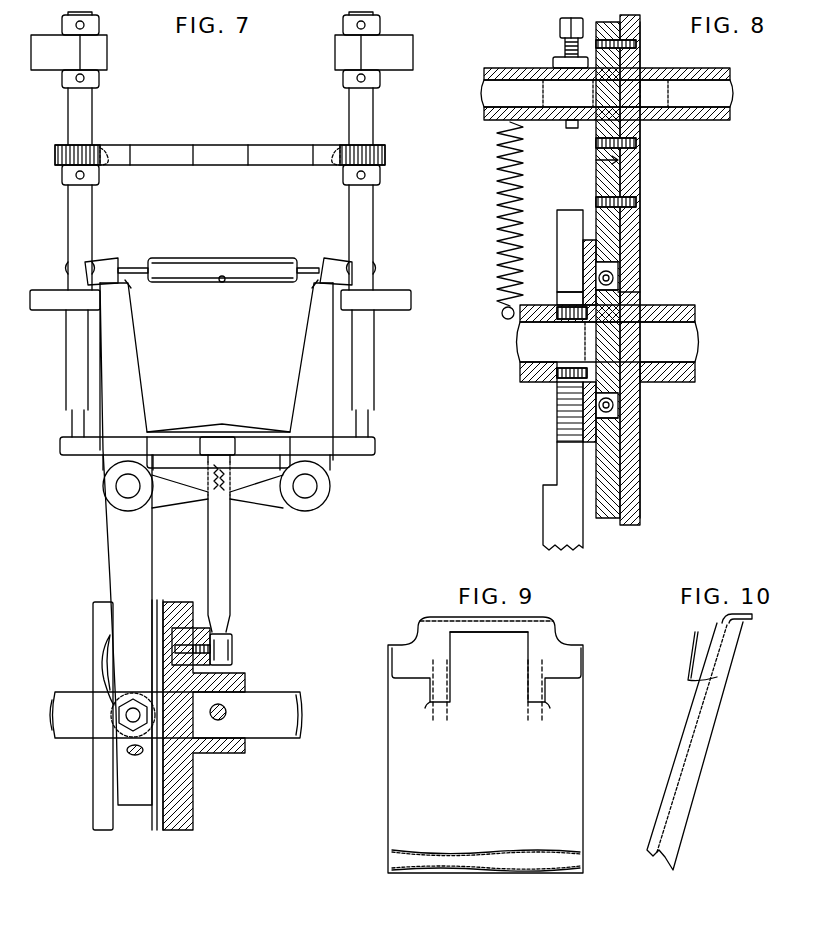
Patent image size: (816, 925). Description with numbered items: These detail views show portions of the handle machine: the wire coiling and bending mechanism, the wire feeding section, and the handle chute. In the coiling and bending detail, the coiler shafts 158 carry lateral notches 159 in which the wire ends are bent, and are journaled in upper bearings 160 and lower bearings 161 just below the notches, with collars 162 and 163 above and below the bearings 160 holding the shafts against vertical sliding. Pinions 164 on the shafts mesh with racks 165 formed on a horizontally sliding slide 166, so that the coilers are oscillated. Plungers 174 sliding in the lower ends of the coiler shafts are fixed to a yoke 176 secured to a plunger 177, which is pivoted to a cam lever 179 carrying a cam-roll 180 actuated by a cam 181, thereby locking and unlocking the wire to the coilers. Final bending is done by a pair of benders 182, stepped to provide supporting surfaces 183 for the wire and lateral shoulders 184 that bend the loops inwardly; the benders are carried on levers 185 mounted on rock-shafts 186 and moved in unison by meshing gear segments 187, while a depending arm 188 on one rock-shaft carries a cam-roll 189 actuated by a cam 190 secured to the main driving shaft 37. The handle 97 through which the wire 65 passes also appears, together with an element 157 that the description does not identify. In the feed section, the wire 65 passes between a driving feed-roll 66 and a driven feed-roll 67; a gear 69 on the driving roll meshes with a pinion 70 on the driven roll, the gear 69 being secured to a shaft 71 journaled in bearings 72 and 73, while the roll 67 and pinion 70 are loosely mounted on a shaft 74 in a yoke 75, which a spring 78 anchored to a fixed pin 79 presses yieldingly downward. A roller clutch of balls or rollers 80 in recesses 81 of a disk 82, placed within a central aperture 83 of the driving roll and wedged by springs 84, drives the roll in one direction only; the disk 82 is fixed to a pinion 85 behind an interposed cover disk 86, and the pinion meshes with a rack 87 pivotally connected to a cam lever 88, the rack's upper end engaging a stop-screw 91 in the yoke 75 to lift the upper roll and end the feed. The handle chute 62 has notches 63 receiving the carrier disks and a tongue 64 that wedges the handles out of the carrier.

In FIG. 7, the main driving shaft 37 is at (268, 692).
In FIG. 9, the handle chute 62 is at (485, 745).
In FIG. 10, the handle chute 62 is at (703, 760).
In FIG. 9, the notches 63 is at (428, 706).
In FIG. 9, the tongue 64 is at (500, 633).
In FIG. 10, the tongue 64 is at (694, 633).
In FIG. 7, the wire 65 is at (300, 273).
In FIG. 8, the wire 65 is at (594, 158).
In FIG. 8, the driving feed-roll 66 is at (596, 184).
In FIG. 8, the driven feed-roll 67 is at (614, 28).
In FIG. 8, the gear 69 is at (641, 225).
In FIG. 8, the pinion 70 is at (641, 28).
In FIG. 8, the shaft 71 is at (682, 345).
In FIG. 8, the bearing 72 is at (528, 384).
In FIG. 8, the bearing 73 is at (690, 383).
In FIG. 8, the shaft 74 is at (658, 100).
In FIG. 8, the yoke 75 is at (503, 70).
In FIG. 8, the spring 78 is at (523, 190).
In FIG. 8, the fixed pin 79 is at (504, 318).
In FIG. 8, the balls or rollers 80 is at (584, 258).
In FIG. 8, the recesses 81 is at (620, 287).
In FIG. 8, the disk 82 is at (640, 296).
In FIG. 8, the central aperture 83 is at (620, 266).
In FIG. 8, the springs 84 is at (612, 278).
In FIG. 8, the pinion 85 is at (566, 298).
In FIG. 8, the interposed disk 86 is at (590, 445).
In FIG. 8, the rack 87 is at (558, 440).
In FIG. 8, the cam lever 88 is at (558, 233).
In FIG. 8, the stop-screw 91 is at (562, 40).
In FIG. 7, the handle 97 is at (226, 258).
In FIG. 7, the pivot 157 is at (220, 282).
In FIG. 7, the coiler shafts 158 is at (93, 243).
In FIG. 7, the lateral notches 159 is at (66, 268).
In FIG. 7, the bearings 160 is at (107, 52).
In FIG. 7, the bearings 161 is at (46, 310).
In FIG. 7, the collar 162 is at (99, 25).
In FIG. 7, the collar 163 is at (99, 80).
In FIG. 7, the pinions 164 is at (58, 165).
In FIG. 7, the racks 165 is at (112, 168).
In FIG. 7, the slide 166 is at (213, 145).
In FIG. 7, the plunger 174 is at (70, 423).
In FIG. 7, the yoke 176 is at (206, 428).
In FIG. 7, the plunger 177 is at (231, 560).
In FIG. 7, the cam lever 179 is at (222, 637).
In FIG. 7, the cam-roll 180 is at (192, 630).
In FIG. 7, the cam 181 is at (190, 803).
In FIG. 7, the benders 182 is at (112, 258).
In FIG. 7, the supporting surfaces 183 is at (132, 288).
In FIG. 7, the lateral abutments 184 is at (124, 267).
In FIG. 7, the levers 185 is at (144, 372).
In FIG. 7, the rock-shafts 186 is at (116, 486).
In FIG. 7, the gear segments 187 is at (183, 503).
In FIG. 7, the depending arm 188 is at (153, 576).
In FIG. 7, the cam-roll 189 is at (131, 700).
In FIG. 7, the cam 190 is at (94, 790).